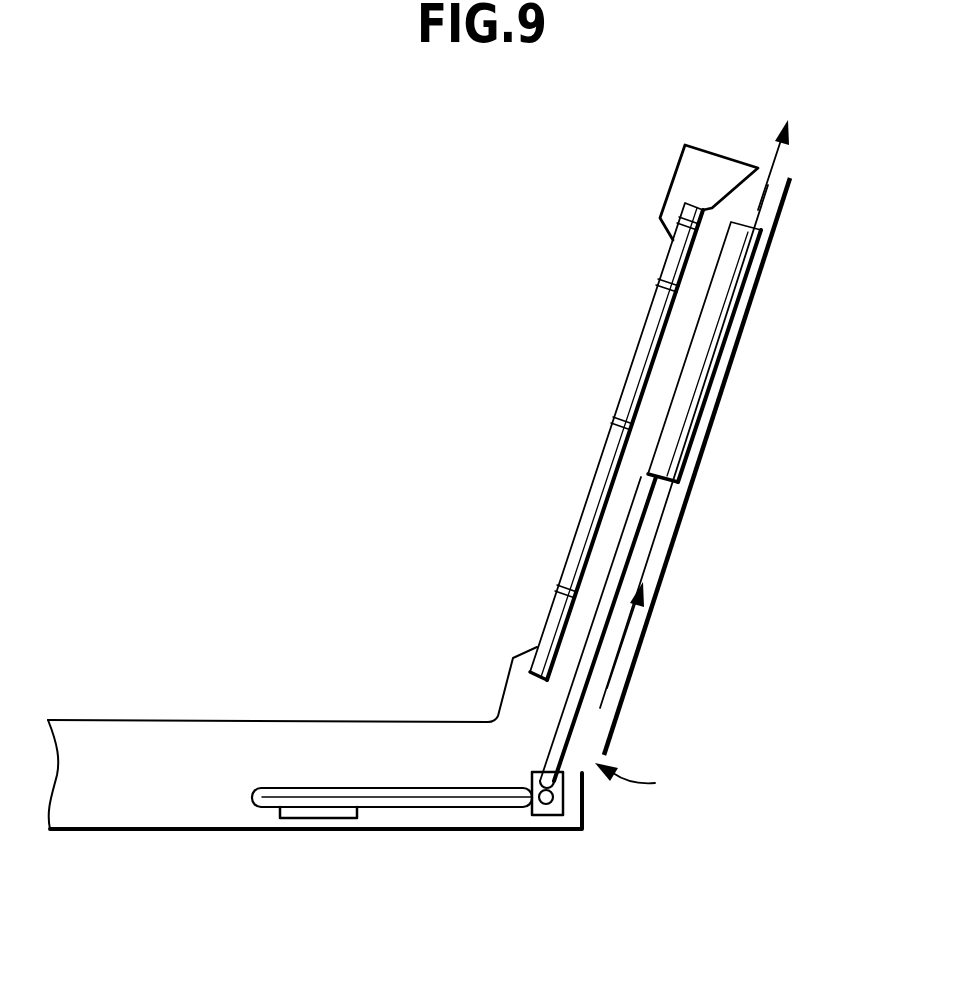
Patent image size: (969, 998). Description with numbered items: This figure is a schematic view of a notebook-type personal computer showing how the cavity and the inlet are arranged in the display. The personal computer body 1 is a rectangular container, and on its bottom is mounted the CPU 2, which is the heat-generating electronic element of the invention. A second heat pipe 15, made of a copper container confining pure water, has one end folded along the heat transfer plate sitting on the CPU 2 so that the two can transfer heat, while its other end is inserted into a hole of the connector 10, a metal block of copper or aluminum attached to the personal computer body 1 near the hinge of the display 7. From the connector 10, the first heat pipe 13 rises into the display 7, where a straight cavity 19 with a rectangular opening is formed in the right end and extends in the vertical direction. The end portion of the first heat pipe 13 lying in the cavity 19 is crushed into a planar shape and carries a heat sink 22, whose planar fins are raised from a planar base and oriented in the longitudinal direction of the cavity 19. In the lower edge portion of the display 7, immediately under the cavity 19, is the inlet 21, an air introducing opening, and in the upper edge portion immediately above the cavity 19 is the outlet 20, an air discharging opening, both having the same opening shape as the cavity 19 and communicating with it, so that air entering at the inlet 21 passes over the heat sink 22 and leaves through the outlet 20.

The personal computer body 1 is at (177, 716).
The CPU 2 is at (307, 812).
The display 7 is at (596, 453).
The connector 10 is at (558, 803).
The first heat pipe 13 is at (628, 532).
The second heat pipe 15 is at (443, 800).
The cavity 19 is at (657, 588).
The outlet 20 is at (783, 168).
The inlet 21 is at (643, 781).
The heat sink 22 is at (718, 310).